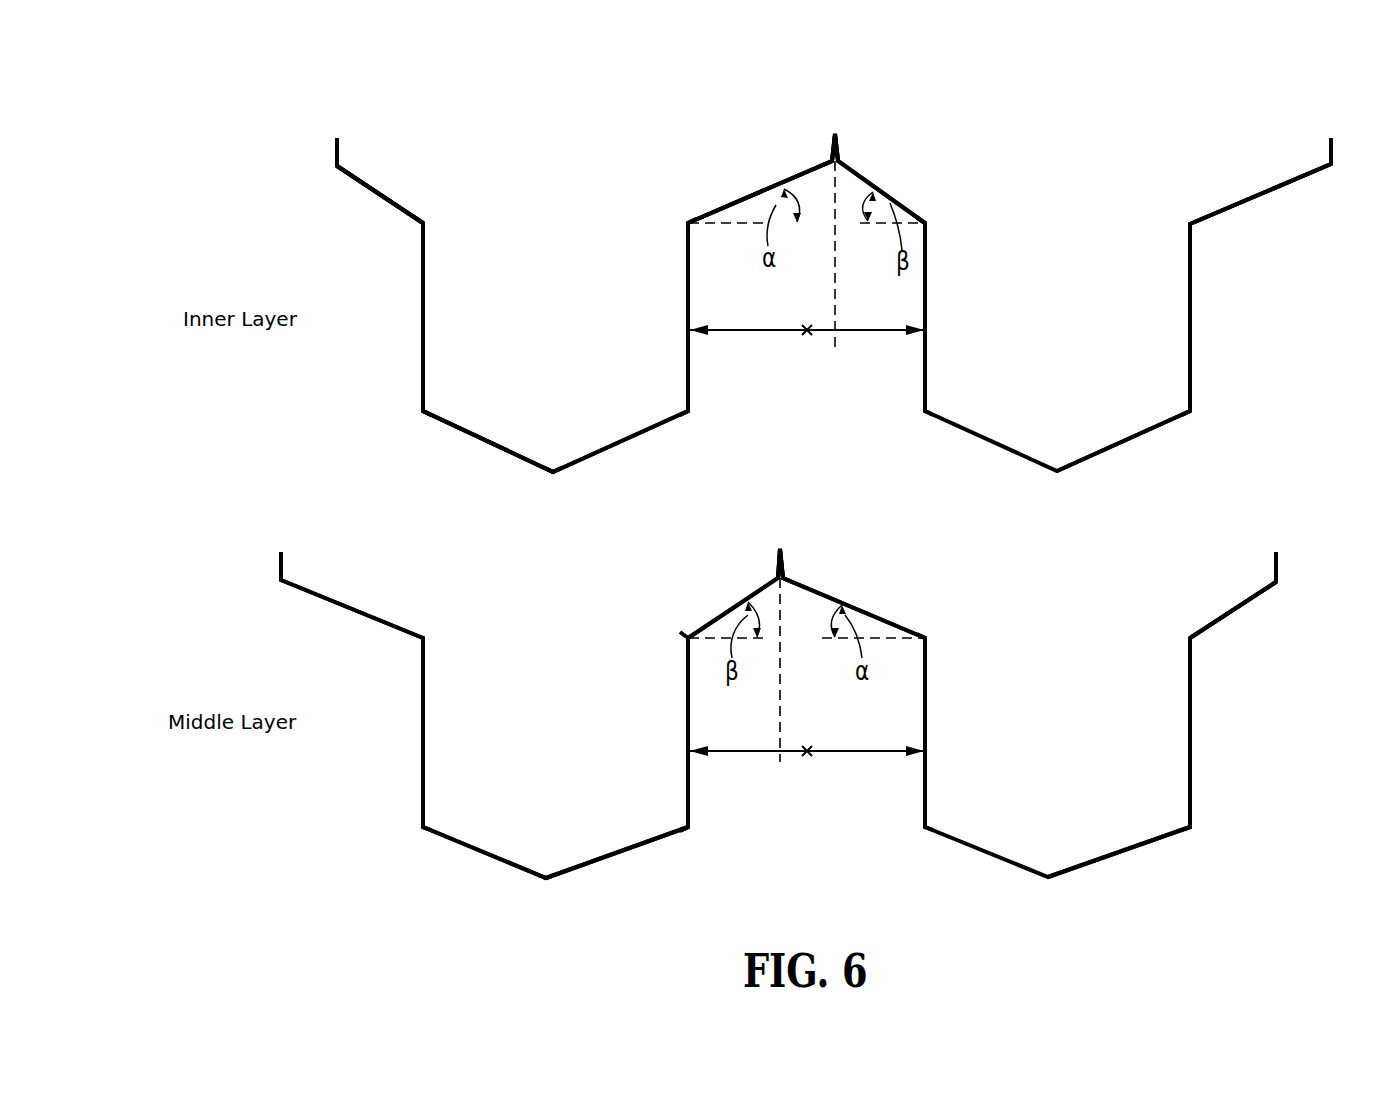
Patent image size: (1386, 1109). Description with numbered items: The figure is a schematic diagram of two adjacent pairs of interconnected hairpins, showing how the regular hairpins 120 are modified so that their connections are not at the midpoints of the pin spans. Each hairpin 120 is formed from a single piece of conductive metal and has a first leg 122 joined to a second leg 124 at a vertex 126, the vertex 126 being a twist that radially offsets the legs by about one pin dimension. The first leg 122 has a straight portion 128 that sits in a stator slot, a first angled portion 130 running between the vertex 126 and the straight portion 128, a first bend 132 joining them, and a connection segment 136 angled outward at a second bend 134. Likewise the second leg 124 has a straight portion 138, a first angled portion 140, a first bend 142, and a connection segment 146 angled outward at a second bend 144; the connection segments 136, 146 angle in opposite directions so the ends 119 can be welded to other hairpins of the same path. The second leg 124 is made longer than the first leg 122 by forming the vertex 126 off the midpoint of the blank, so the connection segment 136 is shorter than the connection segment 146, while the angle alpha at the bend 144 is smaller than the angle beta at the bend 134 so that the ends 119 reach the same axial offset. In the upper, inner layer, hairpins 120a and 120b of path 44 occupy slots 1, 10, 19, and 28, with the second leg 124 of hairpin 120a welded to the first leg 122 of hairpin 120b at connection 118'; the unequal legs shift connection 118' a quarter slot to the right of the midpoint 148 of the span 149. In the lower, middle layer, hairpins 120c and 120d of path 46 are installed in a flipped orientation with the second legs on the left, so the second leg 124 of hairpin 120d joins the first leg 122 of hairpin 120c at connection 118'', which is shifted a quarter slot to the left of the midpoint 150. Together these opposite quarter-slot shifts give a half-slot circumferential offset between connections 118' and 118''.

The hairpin 120a is at (445, 118).
The hairpin 120b is at (1205, 122).
The hairpin 120c is at (445, 910).
The hairpin 120d is at (1138, 880).
The regular hairpin 120 is at (425, 272).
The first leg 122 is at (362, 180).
The second leg 124 is at (688, 272).
The vertex 126 is at (556, 474).
The straight portion 128 is at (425, 342).
The first angled portion 130 is at (500, 448).
The first bend 132 is at (423, 411).
The second bend 134 is at (425, 222).
The connection segment 136 is at (400, 212).
The straight portion 138 is at (688, 305).
The first angled portion 140 is at (652, 428).
The first bend 142 is at (692, 412).
The second bend 144 is at (688, 223).
The connection segment 146 is at (745, 197).
The end 119 is at (831, 152).
The connection 118' is at (816, 144).
The connection 118'' is at (806, 563).
The midpoint 148 is at (808, 334).
The span 149 is at (780, 333).
The midpoint 150 is at (808, 756).
The path 44 is at (1260, 199).
The path 46 is at (1233, 612).
The slot 1 is at (437, 607).
The slot 10 is at (670, 608).
The slot 19 is at (945, 609).
The slot 28 is at (1172, 608).